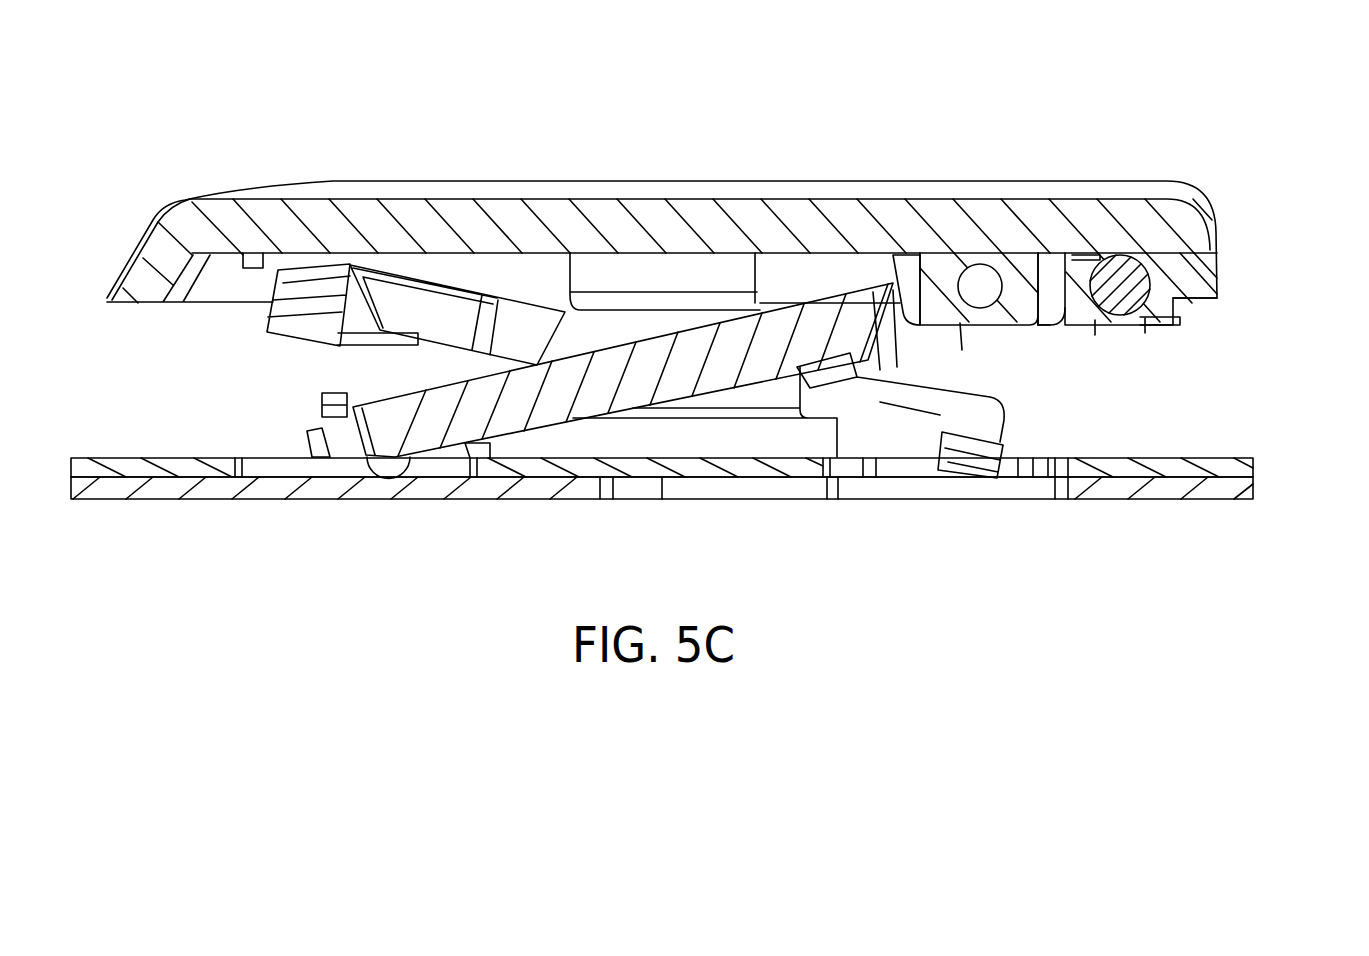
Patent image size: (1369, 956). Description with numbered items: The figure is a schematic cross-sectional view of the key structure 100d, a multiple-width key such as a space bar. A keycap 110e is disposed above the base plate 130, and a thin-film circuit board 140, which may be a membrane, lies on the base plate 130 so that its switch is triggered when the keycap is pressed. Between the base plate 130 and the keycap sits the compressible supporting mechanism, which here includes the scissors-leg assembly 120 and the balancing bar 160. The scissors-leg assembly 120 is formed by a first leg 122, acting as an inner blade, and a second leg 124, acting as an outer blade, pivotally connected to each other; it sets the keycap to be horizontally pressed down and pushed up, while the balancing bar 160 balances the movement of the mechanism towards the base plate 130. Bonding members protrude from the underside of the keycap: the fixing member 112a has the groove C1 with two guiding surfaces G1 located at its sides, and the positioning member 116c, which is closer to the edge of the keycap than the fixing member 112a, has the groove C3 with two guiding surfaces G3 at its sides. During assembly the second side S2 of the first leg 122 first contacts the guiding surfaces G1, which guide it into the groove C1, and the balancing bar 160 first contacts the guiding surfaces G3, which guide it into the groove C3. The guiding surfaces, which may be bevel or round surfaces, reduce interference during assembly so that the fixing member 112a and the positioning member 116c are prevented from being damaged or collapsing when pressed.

The key structure 100d is at (1328, 595).
The keycap 110e is at (952, 190).
The second side of the first leg S2 is at (987, 240).
The groove C1 is at (958, 278).
The fixing member 112a is at (1018, 290).
The groove C3 is at (1083, 298).
The positioning member 116c is at (1160, 290).
The balancing bar 160 is at (1180, 317).
The guiding surface G1 is at (1006, 331).
The guiding surface G3 is at (1131, 327).
The scissors-leg assembly 120 is at (1213, 373).
The first leg 122 is at (900, 384).
The second leg 124 is at (898, 434).
The thin-film circuit board 140 is at (1168, 470).
The base plate 130 is at (1232, 470).